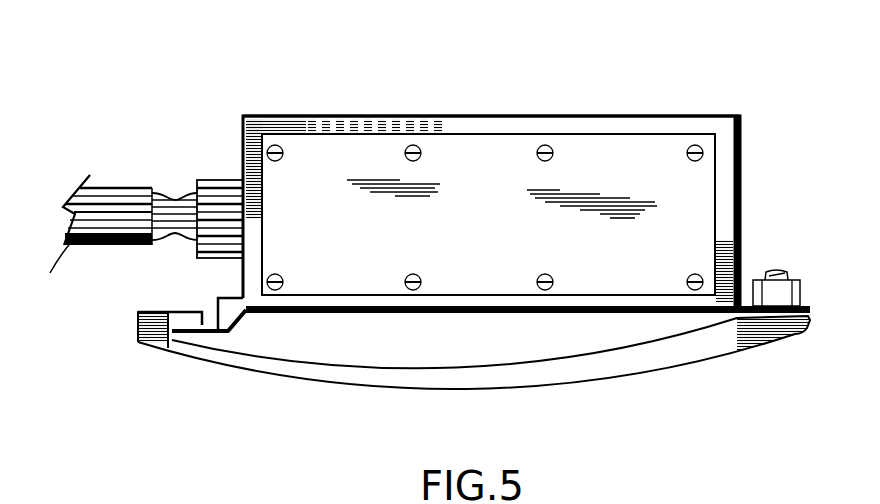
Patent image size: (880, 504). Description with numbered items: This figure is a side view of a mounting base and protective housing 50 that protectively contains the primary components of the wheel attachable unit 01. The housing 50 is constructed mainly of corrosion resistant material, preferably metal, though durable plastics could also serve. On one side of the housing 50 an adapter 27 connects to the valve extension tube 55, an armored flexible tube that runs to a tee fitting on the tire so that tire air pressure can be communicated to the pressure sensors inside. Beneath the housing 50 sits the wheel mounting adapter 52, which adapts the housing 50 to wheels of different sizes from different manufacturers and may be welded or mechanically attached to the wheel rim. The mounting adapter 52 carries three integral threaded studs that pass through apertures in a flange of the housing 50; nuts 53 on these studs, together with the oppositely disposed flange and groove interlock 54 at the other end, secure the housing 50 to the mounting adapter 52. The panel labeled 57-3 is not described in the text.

The wheel attachable unit 01 is at (374, 108).
The adapter 27 is at (230, 180).
The housing 50 is at (570, 115).
The wheel mounting adapter 52 is at (627, 369).
The nuts 53 is at (800, 281).
The flange and groove interlock 54 is at (148, 344).
The valve extension tube 55 is at (100, 245).
The panel 57-3 is at (710, 183).